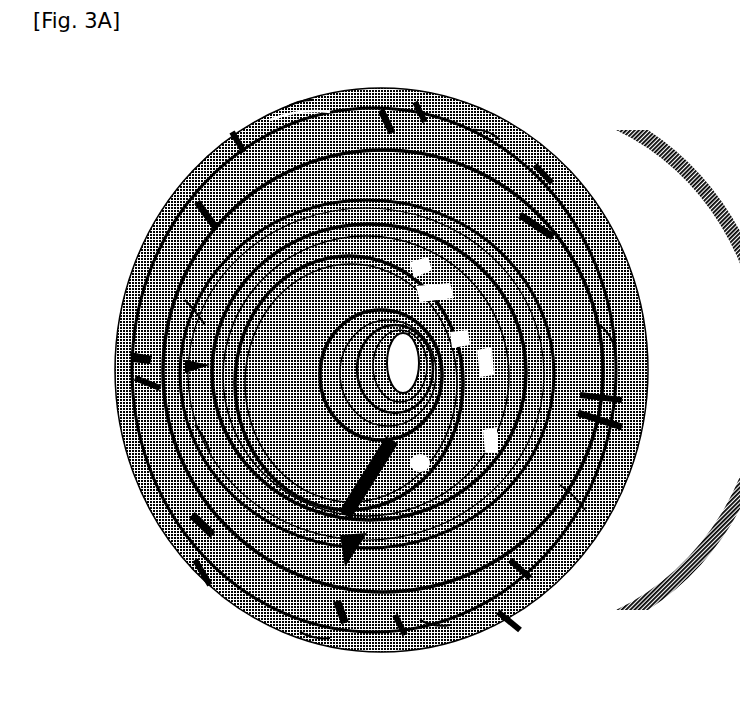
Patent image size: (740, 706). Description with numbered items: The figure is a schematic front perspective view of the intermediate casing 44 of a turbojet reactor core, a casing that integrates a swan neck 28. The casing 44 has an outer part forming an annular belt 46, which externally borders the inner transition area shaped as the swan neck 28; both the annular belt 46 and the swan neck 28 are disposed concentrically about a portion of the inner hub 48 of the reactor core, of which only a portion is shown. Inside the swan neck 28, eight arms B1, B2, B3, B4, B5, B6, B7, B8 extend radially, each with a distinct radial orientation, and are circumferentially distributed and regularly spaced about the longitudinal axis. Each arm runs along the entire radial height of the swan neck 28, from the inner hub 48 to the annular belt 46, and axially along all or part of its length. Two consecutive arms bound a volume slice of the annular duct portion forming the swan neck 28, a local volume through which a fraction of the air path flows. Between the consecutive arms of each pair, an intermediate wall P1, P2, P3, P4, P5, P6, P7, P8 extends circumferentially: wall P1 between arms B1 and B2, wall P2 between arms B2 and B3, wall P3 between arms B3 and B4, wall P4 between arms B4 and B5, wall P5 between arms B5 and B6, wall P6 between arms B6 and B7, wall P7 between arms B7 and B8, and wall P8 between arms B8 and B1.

The intermediate casing 44 is at (128, 205).
The annular belt 46 is at (130, 367).
The inner hub 48 is at (200, 483).
The swan neck 28 is at (240, 593).
The arm B1 is at (237, 130).
The arm B2 is at (423, 100).
The arm B3 is at (545, 170).
The arm B4 is at (635, 396).
The arm B5 is at (507, 636).
The arm B6 is at (405, 632).
The arm B7 is at (200, 573).
The arm B8 is at (140, 382).
The intermediate wall P1 is at (297, 100).
The intermediate wall P2 is at (482, 135).
The intermediate wall P3 is at (625, 333).
The intermediate wall P4 is at (587, 500).
The intermediate wall P5 is at (437, 626).
The intermediate wall P6 is at (318, 642).
The intermediate wall P7 is at (205, 431).
The intermediate wall P8 is at (200, 312).